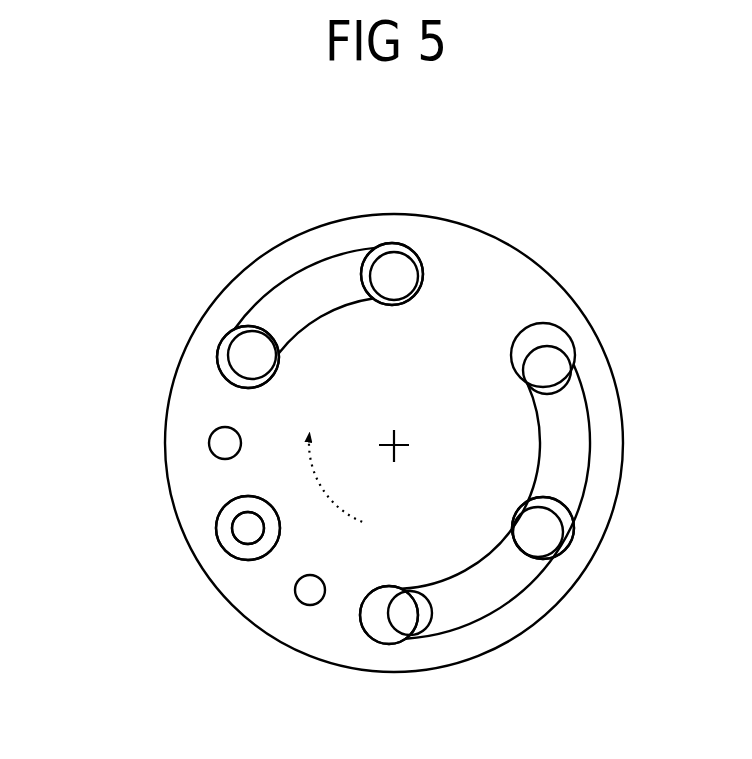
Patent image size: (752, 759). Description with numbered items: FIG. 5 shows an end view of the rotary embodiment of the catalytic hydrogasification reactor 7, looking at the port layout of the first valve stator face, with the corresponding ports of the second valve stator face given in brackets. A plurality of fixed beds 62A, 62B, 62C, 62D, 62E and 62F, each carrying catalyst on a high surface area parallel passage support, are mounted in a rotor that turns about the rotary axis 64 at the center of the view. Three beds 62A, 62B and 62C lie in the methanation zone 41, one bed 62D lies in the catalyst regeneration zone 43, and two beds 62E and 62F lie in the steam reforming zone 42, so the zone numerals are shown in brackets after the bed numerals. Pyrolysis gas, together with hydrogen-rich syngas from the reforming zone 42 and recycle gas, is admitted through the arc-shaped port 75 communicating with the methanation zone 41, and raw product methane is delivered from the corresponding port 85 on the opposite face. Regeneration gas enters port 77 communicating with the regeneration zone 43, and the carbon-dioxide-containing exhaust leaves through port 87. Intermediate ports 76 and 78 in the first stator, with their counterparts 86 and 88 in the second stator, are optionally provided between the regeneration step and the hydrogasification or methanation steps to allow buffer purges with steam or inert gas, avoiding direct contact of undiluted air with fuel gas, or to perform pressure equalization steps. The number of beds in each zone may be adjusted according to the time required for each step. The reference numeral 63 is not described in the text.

The hydrogasification reactor 7 is at (98, 144).
The outer peripheral surface 63 is at (378, 211).
The rotary axis 64 is at (397, 437).
The fluid connection port 75 is at (300, 272).
The fluid connection port 85 is at (412, 443).
The fixed bed 62A is at (545, 322).
The fixed bed 62B is at (572, 512).
The fixed bed 62C is at (427, 628).
The fixed bed 62D is at (258, 560).
The fixed bed 62E is at (222, 341).
The fixed bed 62F is at (426, 257).
The methanation zone 41 is at (522, 555).
The steam reforming zone 42 is at (386, 307).
The catalyst regeneration zone 43 is at (216, 518).
The intermediate port 76 is at (310, 606).
The intermediate port 86 is at (310, 590).
The fluid connection port 77 is at (232, 530).
The fluid connection port 87 is at (248, 528).
The intermediate port 78 is at (208, 441).
The intermediate port 88 is at (225, 443).